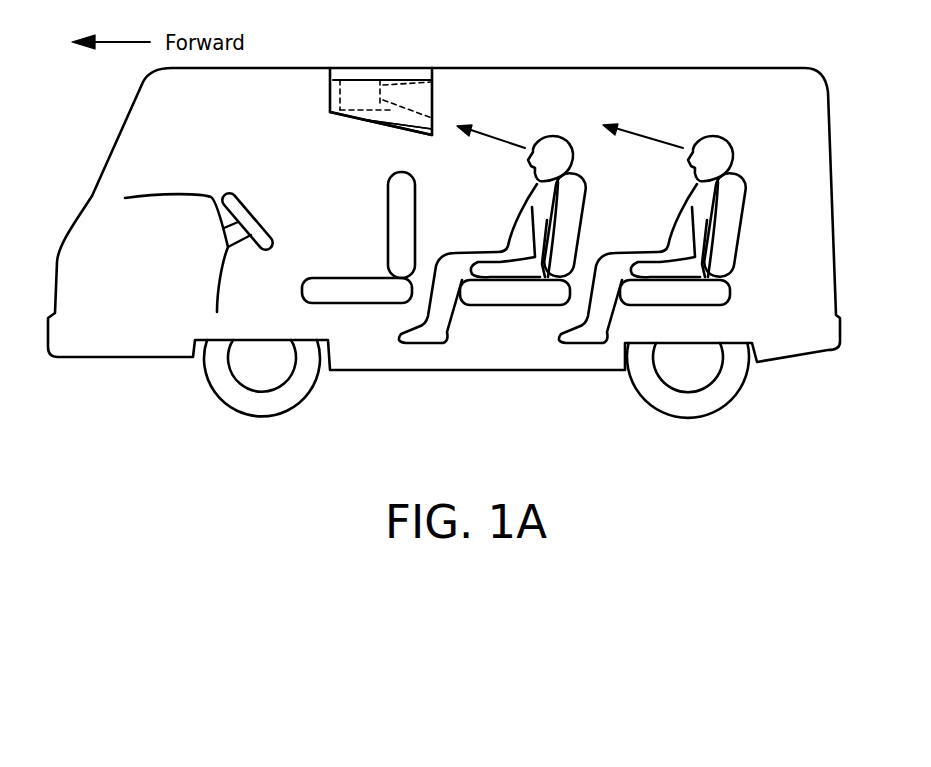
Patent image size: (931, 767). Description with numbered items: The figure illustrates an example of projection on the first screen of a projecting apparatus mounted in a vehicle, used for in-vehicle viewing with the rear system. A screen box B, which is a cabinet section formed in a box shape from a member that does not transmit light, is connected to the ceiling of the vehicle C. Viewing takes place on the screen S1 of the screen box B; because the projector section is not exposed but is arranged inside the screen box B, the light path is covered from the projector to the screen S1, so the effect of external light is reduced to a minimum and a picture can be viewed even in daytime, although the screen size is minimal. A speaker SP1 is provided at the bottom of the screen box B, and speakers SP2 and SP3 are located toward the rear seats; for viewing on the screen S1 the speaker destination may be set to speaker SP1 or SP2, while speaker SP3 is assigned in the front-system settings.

The ceiling of a vehicle C is at (273, 66).
The screen S1 is at (434, 100).
The screen box B is at (355, 122).
The speaker SP1 is at (393, 138).
The speaker SP2 is at (493, 249).
The speaker SP3 is at (684, 239).